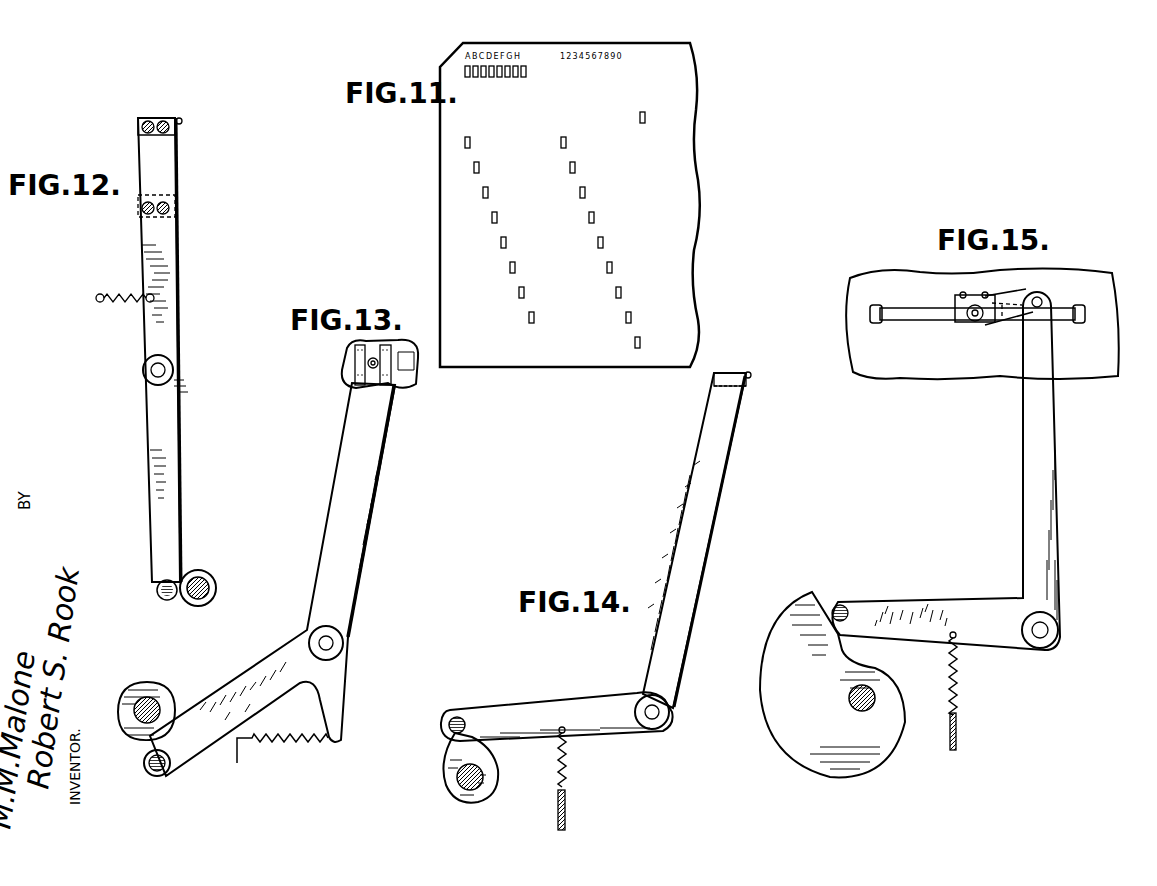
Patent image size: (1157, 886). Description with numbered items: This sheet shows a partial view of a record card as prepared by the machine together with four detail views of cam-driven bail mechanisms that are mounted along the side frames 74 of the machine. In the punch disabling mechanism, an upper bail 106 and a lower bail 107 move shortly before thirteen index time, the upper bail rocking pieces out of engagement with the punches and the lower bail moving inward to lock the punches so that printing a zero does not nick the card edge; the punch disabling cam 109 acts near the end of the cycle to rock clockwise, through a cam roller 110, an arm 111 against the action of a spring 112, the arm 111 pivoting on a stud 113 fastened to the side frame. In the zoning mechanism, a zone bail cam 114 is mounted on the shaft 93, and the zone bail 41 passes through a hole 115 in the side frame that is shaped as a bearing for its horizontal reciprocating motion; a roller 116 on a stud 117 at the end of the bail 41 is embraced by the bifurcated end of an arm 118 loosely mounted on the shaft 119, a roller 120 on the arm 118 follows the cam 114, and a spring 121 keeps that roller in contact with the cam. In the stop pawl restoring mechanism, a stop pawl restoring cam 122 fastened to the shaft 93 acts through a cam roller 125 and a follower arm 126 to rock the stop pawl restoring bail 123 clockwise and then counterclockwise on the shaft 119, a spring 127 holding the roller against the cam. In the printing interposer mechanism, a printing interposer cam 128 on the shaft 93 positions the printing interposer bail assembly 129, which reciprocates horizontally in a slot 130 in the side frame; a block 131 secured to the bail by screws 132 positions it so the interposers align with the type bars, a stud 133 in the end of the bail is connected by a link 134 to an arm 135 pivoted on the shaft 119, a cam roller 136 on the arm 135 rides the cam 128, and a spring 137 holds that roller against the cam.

In FIG. 13, the zone bail 41 is at (392, 388).
In FIG. 13, the side frame 74 is at (352, 385).
In FIG. 12, the shaft 93 is at (205, 592).
In FIG. 13, the shaft 93 is at (155, 706).
In FIG. 14, the shaft 93 is at (463, 783).
In FIG. 15, the shaft 93 is at (870, 706).
In FIG. 12, the upper bail 106 is at (182, 121).
In FIG. 12, the lower bail 107 is at (180, 202).
In FIG. 12, the punch disabling cam 109 is at (210, 576).
In FIG. 12, the cam roller 110 is at (160, 590).
In FIG. 12, the arm 111 is at (152, 430).
In FIG. 12, the spring 112 is at (115, 290).
In FIG. 12, the stud 113 is at (165, 370).
In FIG. 13, the zone bail cam 114 is at (148, 690).
In FIG. 13, the hole 115 is at (410, 370).
In FIG. 13, the roller 116 is at (365, 343).
In FIG. 13, the stud 117 is at (368, 366).
In FIG. 13, the arm 118 is at (356, 505).
In FIG. 13, the shaft 119 is at (333, 643).
In FIG. 14, the shaft 119 is at (657, 720).
In FIG. 15, the shaft 119 is at (1035, 628).
In FIG. 13, the roller 120 is at (160, 770).
In FIG. 13, the spring 121 is at (290, 745).
In FIG. 14, the stop pawl restoring cam 122 is at (493, 785).
In FIG. 14, the stop pawl restoring bail 123 is at (751, 374).
In FIG. 14, the cam roller 125 is at (458, 716).
In FIG. 14, the follower arm 126 is at (540, 707).
In FIG. 14, the spring 127 is at (567, 763).
In FIG. 15, the printing interposer cam 128 is at (782, 715).
In FIG. 15, the printing interposer bail assembly 129 is at (960, 316).
In FIG. 15, the slot 130 is at (895, 314).
In FIG. 15, the block 131 is at (960, 300).
In FIG. 15, the screw 132 is at (990, 294).
In FIG. 15, the stud 133 is at (979, 322).
In FIG. 15, the link 134 is at (1012, 318).
In FIG. 15, the arm 135 is at (1052, 462).
In FIG. 15, the cam roller 136 is at (848, 610).
In FIG. 15, the spring 137 is at (958, 688).